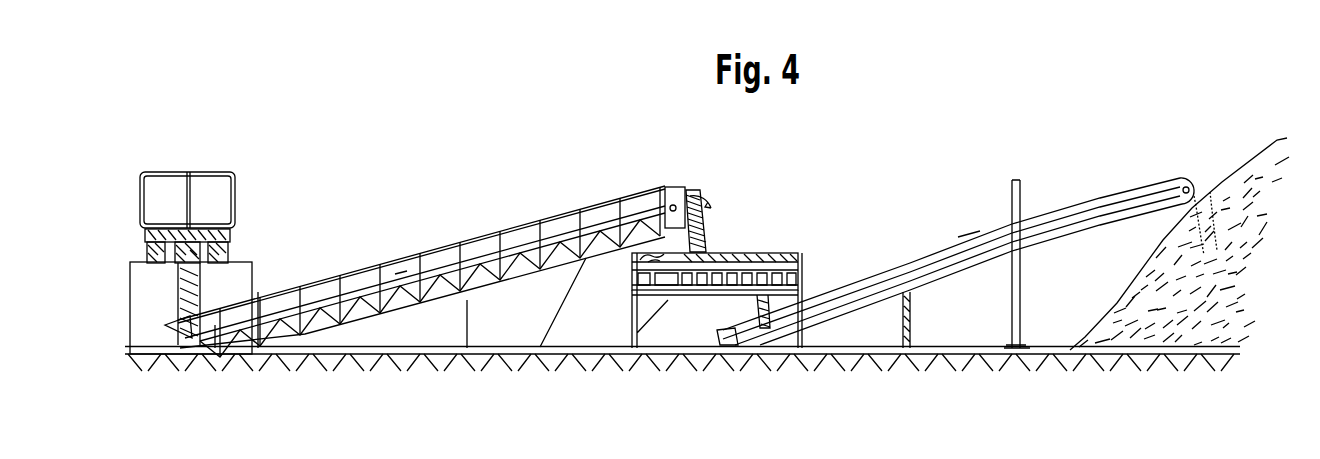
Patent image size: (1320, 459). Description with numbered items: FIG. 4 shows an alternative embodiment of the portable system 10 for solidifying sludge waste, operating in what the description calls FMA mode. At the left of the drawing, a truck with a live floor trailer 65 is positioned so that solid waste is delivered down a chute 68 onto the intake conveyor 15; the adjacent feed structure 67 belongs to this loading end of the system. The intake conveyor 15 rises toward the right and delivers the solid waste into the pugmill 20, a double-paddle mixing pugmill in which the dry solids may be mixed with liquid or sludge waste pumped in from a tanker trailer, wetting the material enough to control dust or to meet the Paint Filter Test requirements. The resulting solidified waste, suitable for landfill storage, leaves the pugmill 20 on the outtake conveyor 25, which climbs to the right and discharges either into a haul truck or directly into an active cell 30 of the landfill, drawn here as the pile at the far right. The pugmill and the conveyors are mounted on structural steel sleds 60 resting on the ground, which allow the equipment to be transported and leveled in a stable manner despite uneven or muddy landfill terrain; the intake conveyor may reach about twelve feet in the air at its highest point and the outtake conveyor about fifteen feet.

The portable system 10 is at (1006, 131).
The intake conveyor 15 is at (522, 217).
The pugmill 20 is at (753, 250).
The outtake conveyor 25 is at (1113, 193).
The active cell 30 is at (1140, 273).
The structural steel sleds 60 is at (472, 387).
The live floor trailer 65 is at (191, 263).
The feeder 67 is at (240, 262).
The chute 68 is at (198, 296).